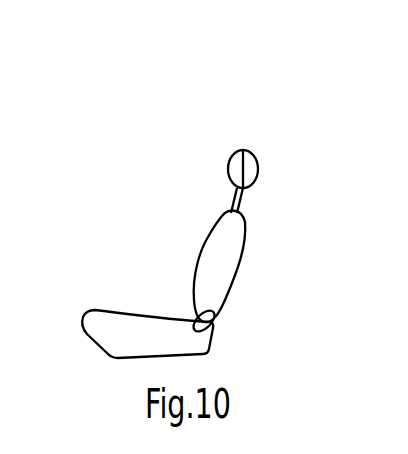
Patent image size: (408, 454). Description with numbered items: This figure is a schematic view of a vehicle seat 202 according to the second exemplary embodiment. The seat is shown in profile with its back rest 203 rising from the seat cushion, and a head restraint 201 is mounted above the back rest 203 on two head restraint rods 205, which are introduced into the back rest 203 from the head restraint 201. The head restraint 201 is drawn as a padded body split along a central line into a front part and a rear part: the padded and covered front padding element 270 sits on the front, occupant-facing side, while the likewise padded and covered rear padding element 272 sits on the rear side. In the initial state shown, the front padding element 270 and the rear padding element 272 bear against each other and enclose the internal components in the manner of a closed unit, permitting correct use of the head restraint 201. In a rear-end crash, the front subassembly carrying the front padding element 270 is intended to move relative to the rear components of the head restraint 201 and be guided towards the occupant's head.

The head restraint 201 is at (233, 207).
The vehicle seat 202 is at (176, 282).
The back rest 203 is at (223, 264).
The head restraint rods 205 is at (243, 201).
The front padding element 270 is at (237, 165).
The rear padding element 272 is at (248, 168).